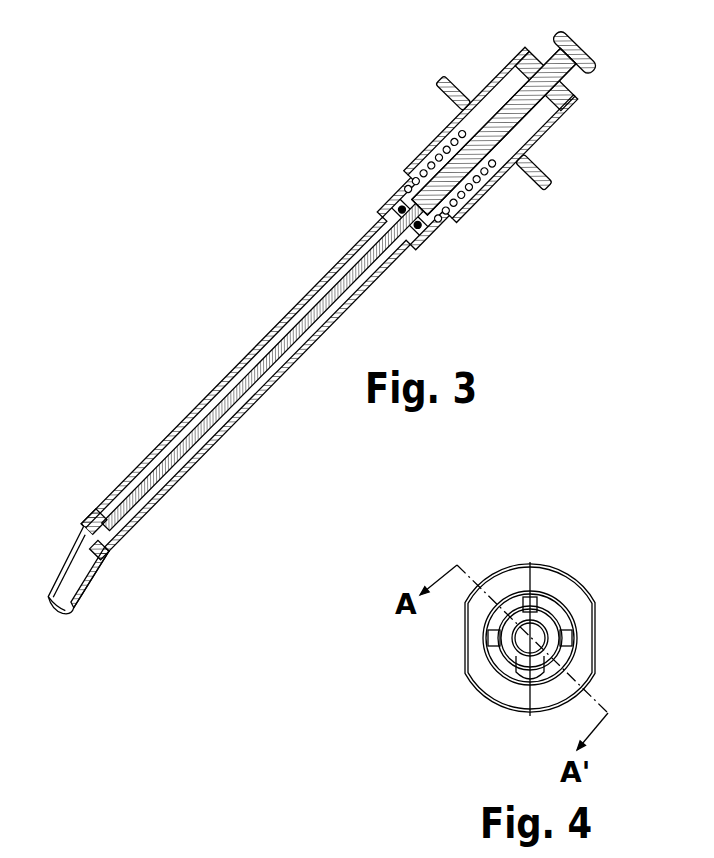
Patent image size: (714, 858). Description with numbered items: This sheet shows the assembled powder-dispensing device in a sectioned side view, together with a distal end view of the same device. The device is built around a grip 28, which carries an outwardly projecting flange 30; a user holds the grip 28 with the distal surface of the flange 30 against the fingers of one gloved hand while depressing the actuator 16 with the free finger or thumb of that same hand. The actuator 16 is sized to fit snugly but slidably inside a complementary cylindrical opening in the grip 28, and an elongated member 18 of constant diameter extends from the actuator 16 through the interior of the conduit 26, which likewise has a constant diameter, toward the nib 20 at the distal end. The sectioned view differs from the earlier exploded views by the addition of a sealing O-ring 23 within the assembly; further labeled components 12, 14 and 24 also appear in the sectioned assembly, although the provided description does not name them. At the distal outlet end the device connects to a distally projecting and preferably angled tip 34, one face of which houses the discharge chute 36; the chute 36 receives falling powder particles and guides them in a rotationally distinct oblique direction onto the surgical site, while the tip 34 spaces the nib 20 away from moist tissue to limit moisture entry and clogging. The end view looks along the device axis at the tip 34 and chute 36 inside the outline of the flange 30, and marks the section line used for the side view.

In FIG. 3, the body housing 12 is at (563, 133).
In FIG. 3, the plunger knob 14 is at (584, 50).
In FIG. 3, the actuator 16 is at (495, 142).
In FIG. 3, the elongated member 18 is at (385, 258).
In FIG. 3, the nib 20 is at (92, 511).
In FIG. 3, the sealing O-ring 23 is at (400, 205).
In FIG. 3, the spring 24 is at (447, 205).
In FIG. 3, the conduit 26 is at (240, 365).
In FIG. 3, the grip 28 is at (438, 156).
In FIG. 3, the flange 30 is at (445, 79).
In FIG. 4, the flange 30 is at (584, 605).
In FIG. 3, the tip 34 is at (95, 580).
In FIG. 4, the tip 34 is at (515, 677).
In FIG. 3, the discharge chute 36 is at (83, 567).